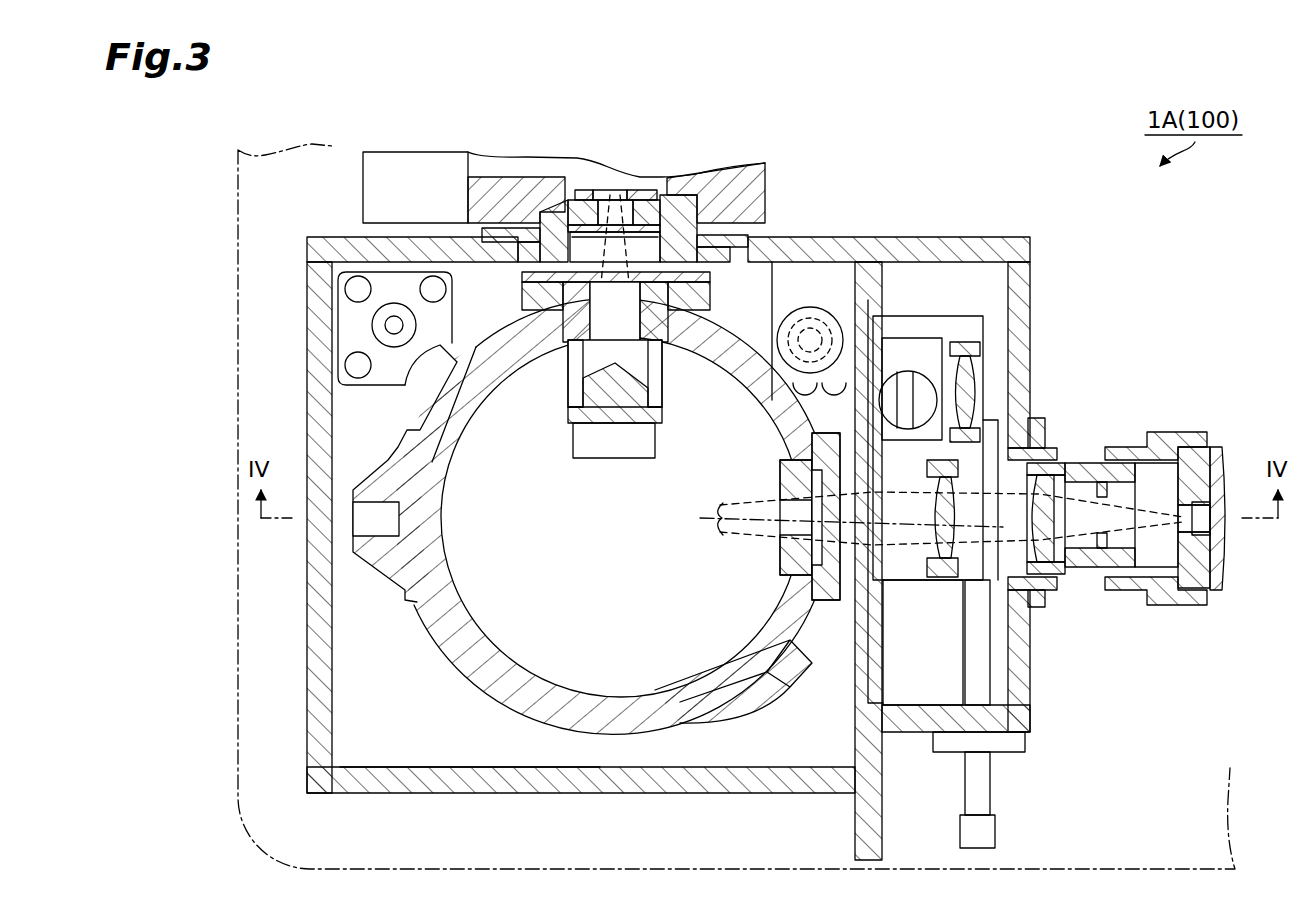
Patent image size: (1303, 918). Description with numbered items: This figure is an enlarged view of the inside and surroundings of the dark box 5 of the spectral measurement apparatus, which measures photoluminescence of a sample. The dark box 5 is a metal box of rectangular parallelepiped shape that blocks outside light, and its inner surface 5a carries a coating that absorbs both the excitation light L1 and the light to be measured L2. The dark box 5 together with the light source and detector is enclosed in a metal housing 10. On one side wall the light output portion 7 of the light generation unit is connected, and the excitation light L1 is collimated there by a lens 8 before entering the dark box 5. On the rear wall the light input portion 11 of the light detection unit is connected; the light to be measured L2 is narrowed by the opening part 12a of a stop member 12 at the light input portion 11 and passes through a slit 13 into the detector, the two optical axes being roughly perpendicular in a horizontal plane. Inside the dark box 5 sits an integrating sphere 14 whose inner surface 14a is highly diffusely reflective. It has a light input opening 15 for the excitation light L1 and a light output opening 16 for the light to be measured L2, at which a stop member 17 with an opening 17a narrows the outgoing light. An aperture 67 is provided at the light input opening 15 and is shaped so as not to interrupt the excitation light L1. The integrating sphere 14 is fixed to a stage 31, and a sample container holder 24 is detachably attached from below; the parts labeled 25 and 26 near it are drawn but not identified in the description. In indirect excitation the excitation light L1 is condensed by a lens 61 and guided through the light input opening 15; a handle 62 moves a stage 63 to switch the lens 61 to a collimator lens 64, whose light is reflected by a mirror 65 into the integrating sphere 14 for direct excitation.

The dark box 5 is at (305, 623).
The inner surface 5a is at (580, 762).
The light output portion 7 is at (1047, 587).
The lens 8 is at (1050, 498).
The housing 10 is at (236, 462).
The light input portion 11 is at (768, 203).
The stop member 12 is at (733, 207).
The opening part 12a is at (650, 222).
The slit 13 is at (607, 190).
The integrating sphere 14 is at (438, 632).
The inner surface 14a is at (552, 684).
The light input opening 15 is at (786, 552).
The light output opening 16 is at (588, 340).
The stop member 17 is at (582, 292).
The opening 17a is at (668, 322).
The sample container holder 24 is at (613, 425).
The support wall 25 is at (574, 396).
The base block 26 is at (652, 441).
The stage 31 is at (413, 752).
The lens 61 is at (937, 513).
The handle 62 is at (985, 794).
The stage 63 is at (975, 327).
The collimator lens 64 is at (975, 386).
The mirror 65 is at (907, 378).
The aperture 67 is at (776, 487).
The excitation light L1 is at (1003, 527).
The light to be measured L2 is at (568, 292).